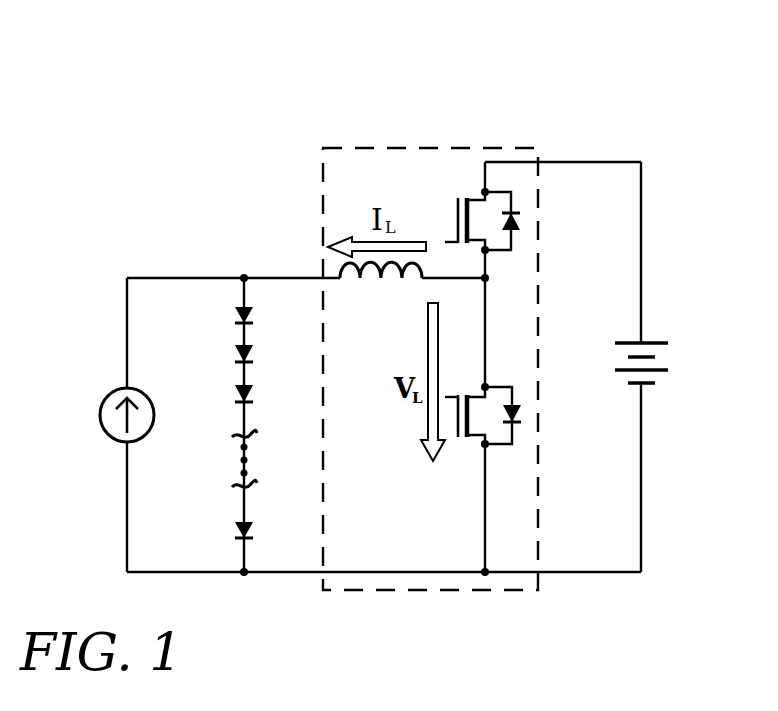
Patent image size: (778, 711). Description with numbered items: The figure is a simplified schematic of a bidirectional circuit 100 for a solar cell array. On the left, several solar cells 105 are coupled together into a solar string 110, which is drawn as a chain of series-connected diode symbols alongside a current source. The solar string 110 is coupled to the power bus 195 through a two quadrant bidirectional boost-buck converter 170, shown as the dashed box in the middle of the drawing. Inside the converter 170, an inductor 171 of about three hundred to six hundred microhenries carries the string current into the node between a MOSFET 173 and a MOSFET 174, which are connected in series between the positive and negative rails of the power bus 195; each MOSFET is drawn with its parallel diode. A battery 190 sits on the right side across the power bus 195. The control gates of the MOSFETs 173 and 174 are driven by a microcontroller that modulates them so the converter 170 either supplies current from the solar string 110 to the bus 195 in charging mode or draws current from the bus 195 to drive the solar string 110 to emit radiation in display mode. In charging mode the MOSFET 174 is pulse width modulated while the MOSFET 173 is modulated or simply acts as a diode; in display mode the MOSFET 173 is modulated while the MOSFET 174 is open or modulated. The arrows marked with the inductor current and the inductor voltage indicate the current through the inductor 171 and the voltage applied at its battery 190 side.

The bidirectional circuit 100 is at (201, 133).
The solar cells 105 is at (232, 319).
The solar string 110 is at (100, 396).
The two quadrant bidirectional boost-buck converter 170 is at (363, 148).
The inductor 171 is at (372, 272).
The MOSFET 173 is at (470, 233).
The MOSFET 174 is at (477, 430).
The battery 190 is at (655, 349).
The power bus 195 is at (625, 162).